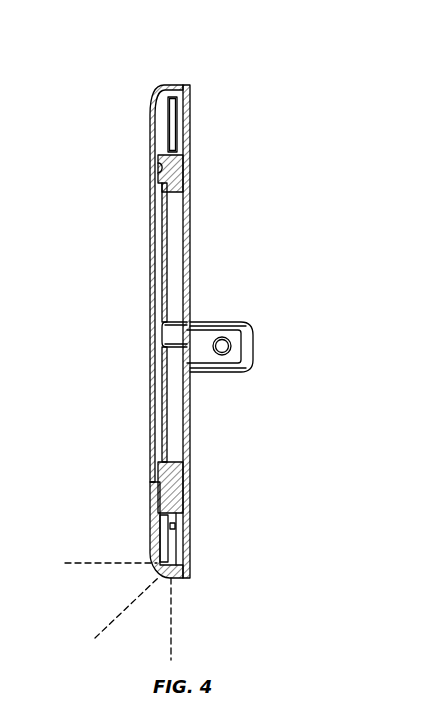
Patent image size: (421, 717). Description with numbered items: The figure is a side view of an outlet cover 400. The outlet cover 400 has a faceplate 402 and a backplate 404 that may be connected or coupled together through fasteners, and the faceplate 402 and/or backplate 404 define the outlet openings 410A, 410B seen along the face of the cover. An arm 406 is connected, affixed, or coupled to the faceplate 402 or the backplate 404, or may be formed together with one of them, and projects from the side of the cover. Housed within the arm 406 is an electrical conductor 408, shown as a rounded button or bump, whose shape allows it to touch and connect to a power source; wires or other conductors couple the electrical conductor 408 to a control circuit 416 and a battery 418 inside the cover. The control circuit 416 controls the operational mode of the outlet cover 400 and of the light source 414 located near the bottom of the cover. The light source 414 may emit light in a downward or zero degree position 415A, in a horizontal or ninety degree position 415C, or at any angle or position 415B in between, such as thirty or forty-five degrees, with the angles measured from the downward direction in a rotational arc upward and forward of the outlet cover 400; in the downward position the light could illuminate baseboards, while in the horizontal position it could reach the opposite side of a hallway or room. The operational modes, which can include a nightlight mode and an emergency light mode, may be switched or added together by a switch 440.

The outlet cover 400 is at (256, 33).
The faceplate 402 is at (176, 85).
The backplate 404 is at (196, 186).
The arm 406 is at (222, 322).
The electrical conductor 408 is at (224, 360).
The outlet opening 410A is at (163, 243).
The outlet opening 410B is at (163, 414).
The light source 414 is at (184, 571).
The downward or 0 degree position 415A is at (172, 632).
The intermediate angle position 415B is at (118, 618).
The horizontal or 90 degree position 415C is at (110, 563).
The control circuit 416 is at (175, 547).
The battery 418 is at (180, 128).
The switch 440 is at (181, 510).